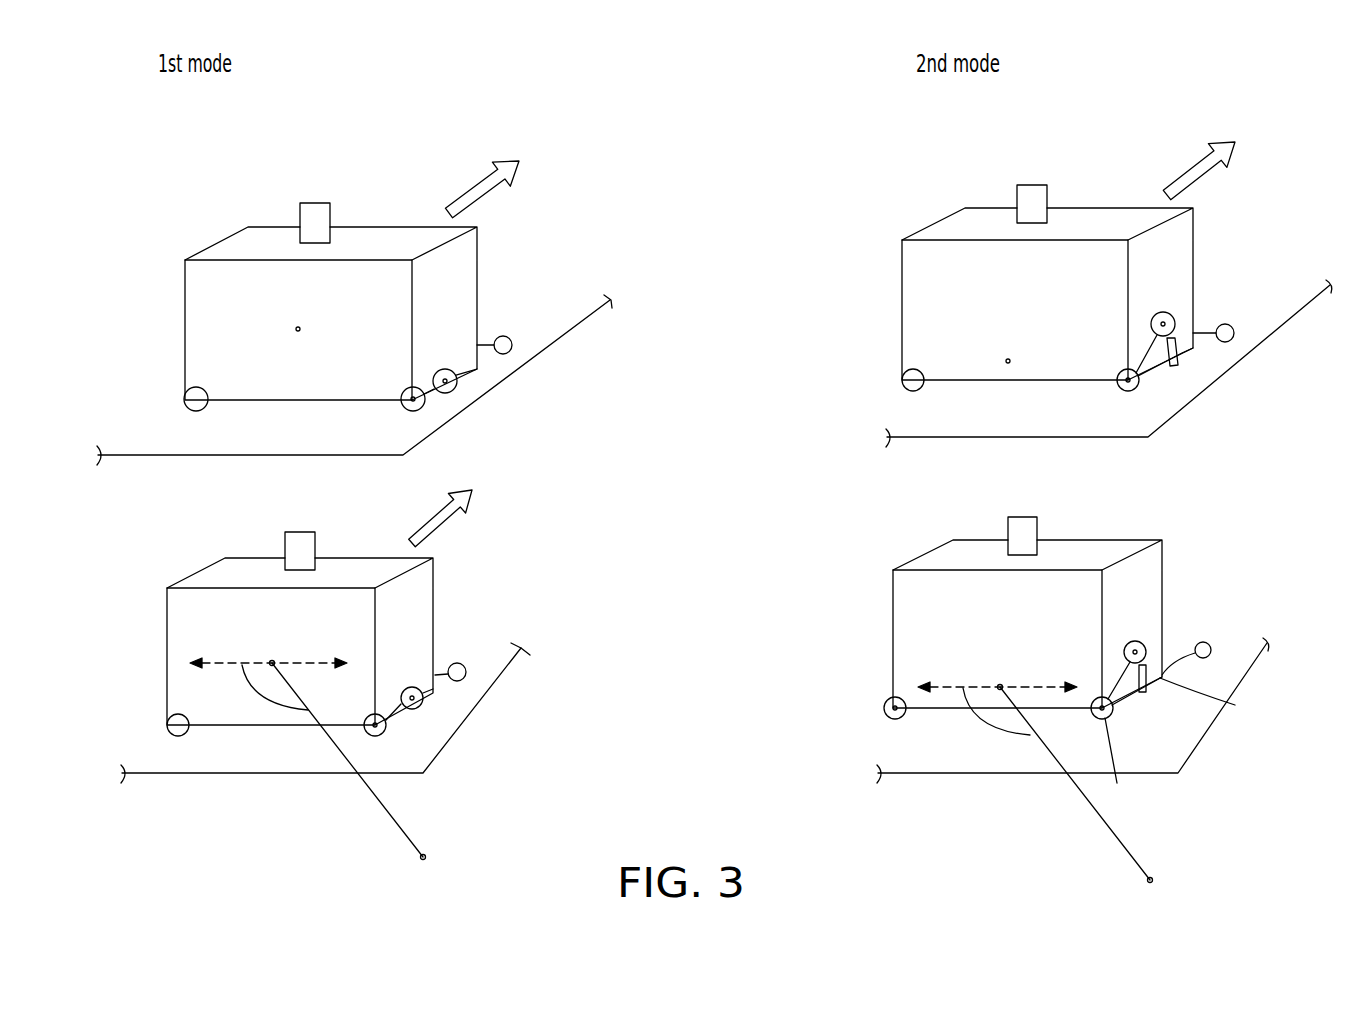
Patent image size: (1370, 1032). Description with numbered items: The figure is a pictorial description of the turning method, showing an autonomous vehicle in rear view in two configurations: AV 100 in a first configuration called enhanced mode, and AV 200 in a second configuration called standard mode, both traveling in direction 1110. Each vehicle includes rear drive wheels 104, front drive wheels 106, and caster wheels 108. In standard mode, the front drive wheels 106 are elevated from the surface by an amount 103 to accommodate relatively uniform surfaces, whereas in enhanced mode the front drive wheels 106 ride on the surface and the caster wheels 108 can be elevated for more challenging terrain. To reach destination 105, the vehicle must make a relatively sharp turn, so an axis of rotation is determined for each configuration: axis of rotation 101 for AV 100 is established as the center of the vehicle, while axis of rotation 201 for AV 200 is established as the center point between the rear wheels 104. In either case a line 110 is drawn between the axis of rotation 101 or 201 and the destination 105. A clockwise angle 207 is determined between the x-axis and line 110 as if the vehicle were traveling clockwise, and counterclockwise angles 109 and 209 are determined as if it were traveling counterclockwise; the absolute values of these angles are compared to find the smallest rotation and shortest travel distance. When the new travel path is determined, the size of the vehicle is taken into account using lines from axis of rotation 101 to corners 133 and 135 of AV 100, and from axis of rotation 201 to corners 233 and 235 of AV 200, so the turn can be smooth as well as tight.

The AV in enhanced mode 100 is at (164, 198).
The AV in standard mode 200 is at (888, 195).
The axis of rotation 101 is at (296, 331).
The axis of rotation 201 is at (1005, 360).
The elevation amount 103 is at (1187, 353).
The rear drive wheels 104 is at (186, 398).
The destination 105 is at (424, 854).
The front drive wheels 106 is at (447, 369).
The caster wheels 108 is at (503, 336).
The counterclockwise angle 109 is at (247, 678).
The line 110 is at (418, 525).
The direction of travel 1110 is at (460, 193).
The corner 133 is at (366, 730).
The corner 135 is at (438, 673).
The clockwise angle 207 is at (1018, 690).
The counterclockwise angle 209 is at (985, 723).
The corner 233 is at (1207, 713).
The corner 235 is at (1118, 767).